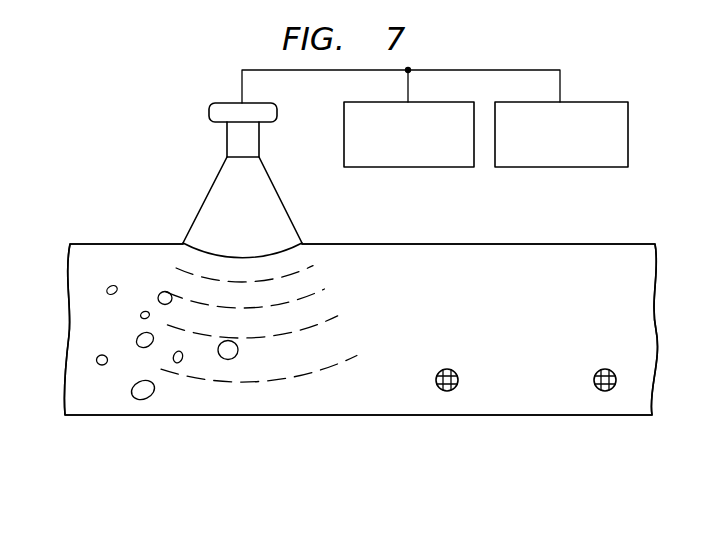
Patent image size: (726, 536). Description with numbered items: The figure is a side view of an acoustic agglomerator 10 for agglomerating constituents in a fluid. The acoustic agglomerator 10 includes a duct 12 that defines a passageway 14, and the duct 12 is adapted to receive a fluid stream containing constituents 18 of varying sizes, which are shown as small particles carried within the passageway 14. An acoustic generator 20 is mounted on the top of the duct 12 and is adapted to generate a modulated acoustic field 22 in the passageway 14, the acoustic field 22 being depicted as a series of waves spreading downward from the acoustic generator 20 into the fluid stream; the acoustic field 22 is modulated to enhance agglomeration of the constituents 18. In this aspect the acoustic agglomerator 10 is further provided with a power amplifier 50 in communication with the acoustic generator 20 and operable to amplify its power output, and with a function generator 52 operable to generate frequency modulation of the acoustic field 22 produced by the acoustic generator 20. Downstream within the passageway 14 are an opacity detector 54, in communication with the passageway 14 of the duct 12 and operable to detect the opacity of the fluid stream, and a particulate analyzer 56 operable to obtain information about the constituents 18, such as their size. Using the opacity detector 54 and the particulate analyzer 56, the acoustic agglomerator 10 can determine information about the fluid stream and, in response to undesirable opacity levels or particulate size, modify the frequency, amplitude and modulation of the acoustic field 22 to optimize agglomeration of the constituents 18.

The acoustic agglomerator 10 is at (127, 178).
The duct 12 is at (392, 414).
The passageway 14 is at (83, 279).
The constituents 18 is at (100, 353).
The acoustic generator 20 is at (226, 147).
The acoustic field 22 is at (330, 366).
The power amplifier 50 is at (408, 168).
The function generator 52 is at (560, 168).
The opacity detector 54 is at (443, 368).
The particulate analyzer 56 is at (603, 368).